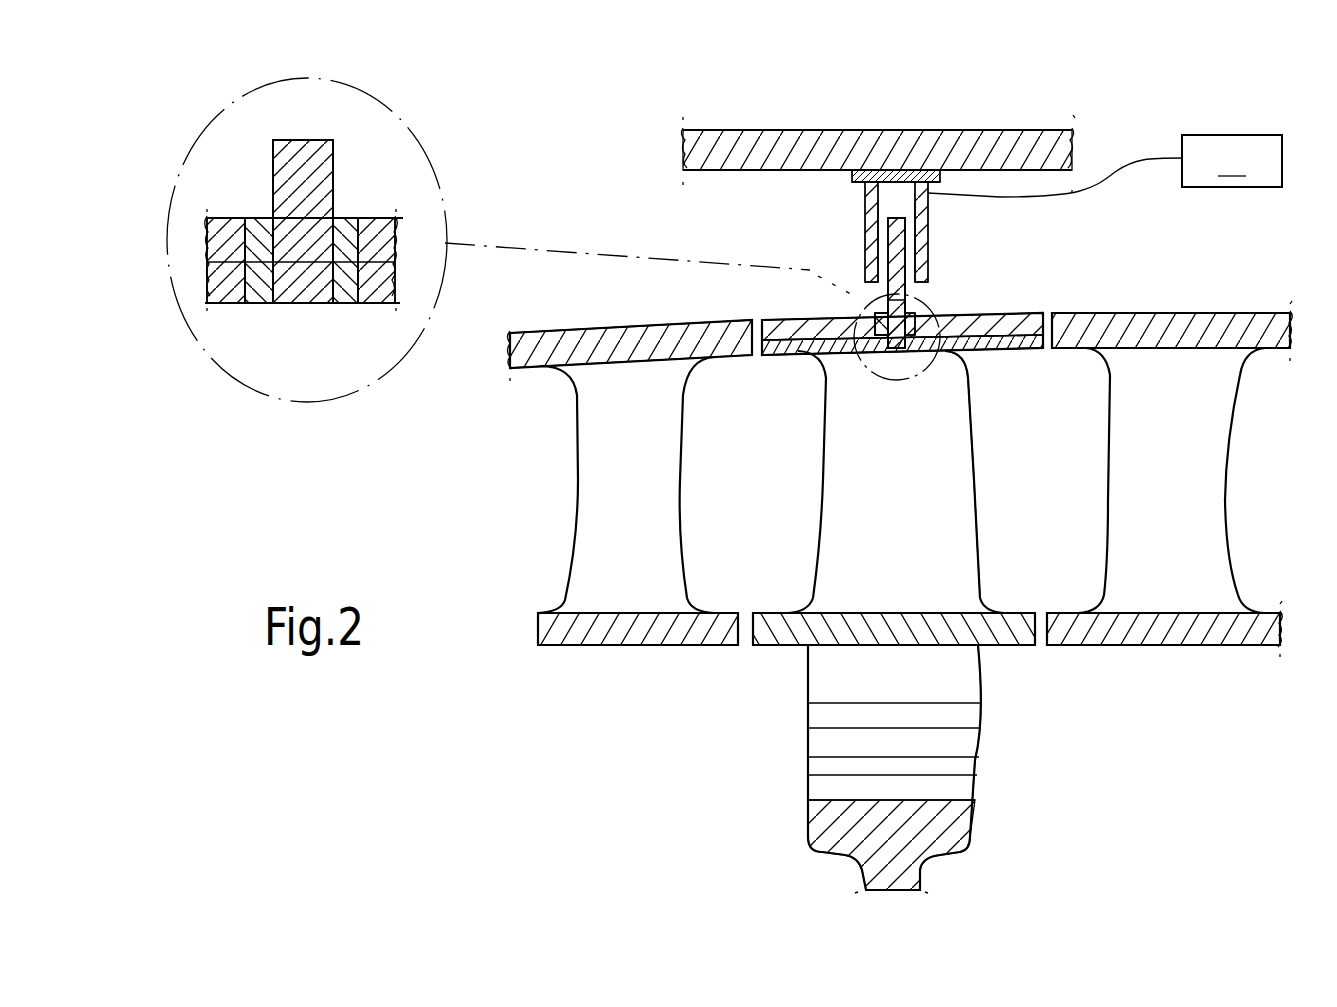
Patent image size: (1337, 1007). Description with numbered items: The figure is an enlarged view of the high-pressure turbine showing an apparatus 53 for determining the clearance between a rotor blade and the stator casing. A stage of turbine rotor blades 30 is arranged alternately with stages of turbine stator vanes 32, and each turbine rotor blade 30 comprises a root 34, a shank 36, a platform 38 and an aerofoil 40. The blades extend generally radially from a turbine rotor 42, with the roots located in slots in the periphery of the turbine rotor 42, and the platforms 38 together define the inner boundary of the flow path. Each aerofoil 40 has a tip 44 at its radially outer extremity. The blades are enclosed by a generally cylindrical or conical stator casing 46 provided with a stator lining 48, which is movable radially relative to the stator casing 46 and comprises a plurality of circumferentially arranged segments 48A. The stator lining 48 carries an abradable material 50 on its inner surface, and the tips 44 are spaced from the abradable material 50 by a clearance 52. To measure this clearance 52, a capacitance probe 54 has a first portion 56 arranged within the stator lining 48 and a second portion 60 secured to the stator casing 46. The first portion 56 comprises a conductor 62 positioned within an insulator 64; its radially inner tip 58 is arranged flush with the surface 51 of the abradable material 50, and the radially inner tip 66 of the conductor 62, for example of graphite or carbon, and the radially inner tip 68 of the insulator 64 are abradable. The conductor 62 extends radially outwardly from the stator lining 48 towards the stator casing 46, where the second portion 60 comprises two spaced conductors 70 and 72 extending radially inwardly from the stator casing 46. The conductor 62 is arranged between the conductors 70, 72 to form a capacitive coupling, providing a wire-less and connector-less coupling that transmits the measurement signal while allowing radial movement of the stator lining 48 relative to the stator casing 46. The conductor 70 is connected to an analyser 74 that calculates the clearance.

The turbine rotor blade 30 is at (950, 547).
The turbine stator vane 32 is at (592, 553).
The root 34 is at (827, 745).
The shank 36 is at (945, 683).
The platform 38 is at (1012, 625).
The aerofoil 40 is at (935, 481).
The turbine rotor 42 is at (840, 825).
The tip 44 is at (940, 360).
The stator casing 46 is at (731, 140).
The stator lining 48 is at (1040, 311).
The segment 48A is at (965, 313).
The abradable material 50 is at (778, 350).
The surface 51 is at (812, 352).
The clearance 52 is at (950, 355).
The apparatus 53 is at (1095, 97).
The capacitance probe 54 is at (855, 271).
The first portion 56 is at (877, 298).
The radially inner tip 58 is at (921, 317).
The second portion 60 is at (852, 203).
The conductor 62 is at (900, 231).
The insulator 64 is at (876, 357).
The radially inner tip of the conductor 66 is at (310, 293).
The radially inner tip of the insulator 68 is at (263, 283).
The conductor 70 is at (906, 188).
The conductor 72 is at (896, 176).
The analyser 74 is at (1105, 166).